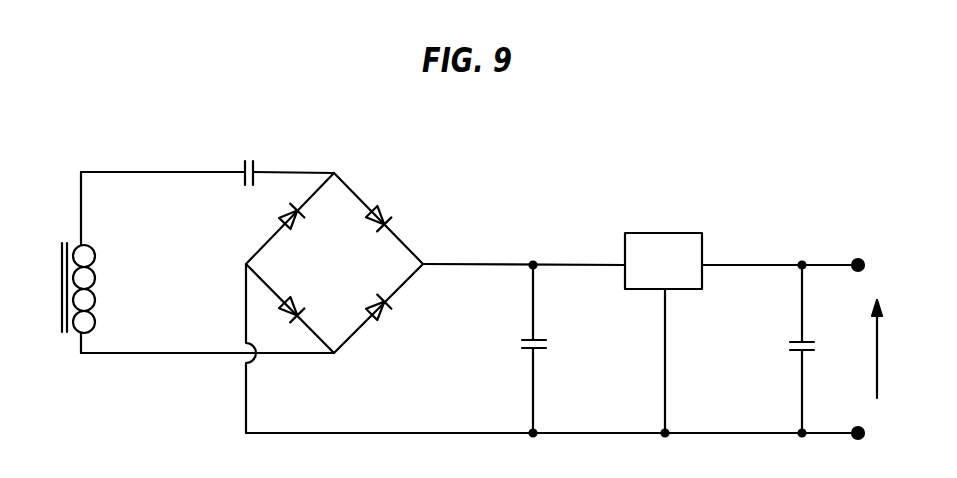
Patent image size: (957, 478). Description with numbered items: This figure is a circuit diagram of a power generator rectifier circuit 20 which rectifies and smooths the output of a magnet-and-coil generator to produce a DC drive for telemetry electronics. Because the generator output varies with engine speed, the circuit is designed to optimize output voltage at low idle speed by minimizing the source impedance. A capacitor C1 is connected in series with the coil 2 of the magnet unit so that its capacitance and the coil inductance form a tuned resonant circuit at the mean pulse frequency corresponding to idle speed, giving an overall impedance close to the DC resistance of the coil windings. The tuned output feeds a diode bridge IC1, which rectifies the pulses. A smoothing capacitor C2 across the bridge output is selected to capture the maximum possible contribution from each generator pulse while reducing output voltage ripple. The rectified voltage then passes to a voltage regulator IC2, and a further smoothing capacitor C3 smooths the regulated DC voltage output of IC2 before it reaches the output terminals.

The coil 2 is at (76, 338).
The power generator rectifier circuit 20 is at (592, 152).
The capacitor C1 is at (243, 165).
The smoothing capacitor C2 is at (526, 337).
The smoothing capacitor C3 is at (794, 339).
The diode bridge IC1 is at (405, 242).
The voltage regulator IC2 is at (652, 233).